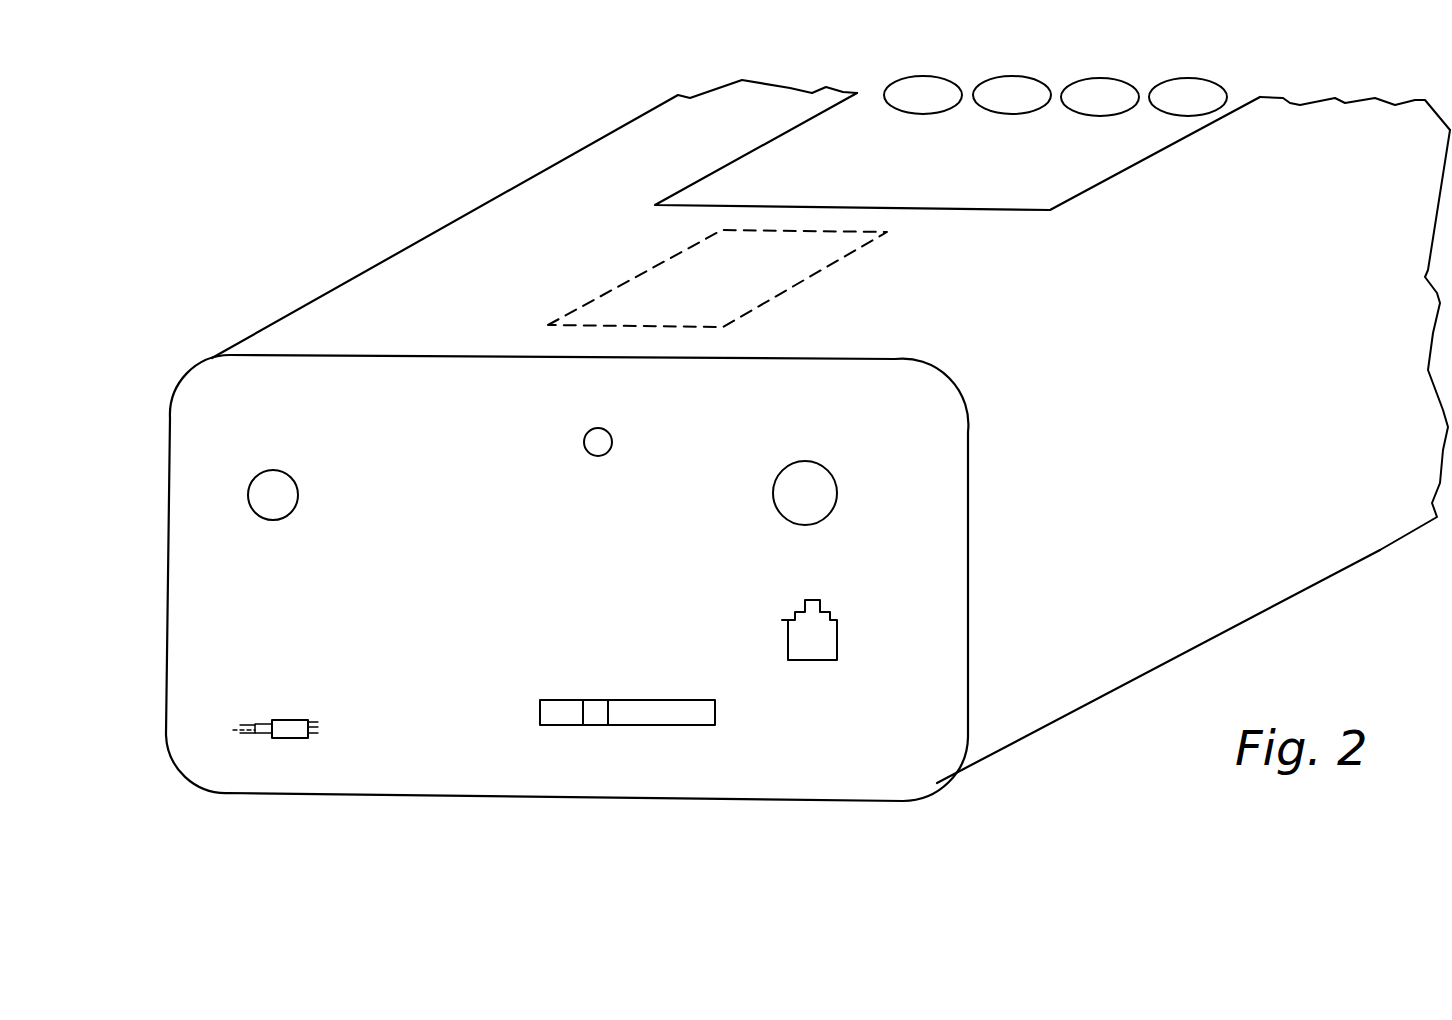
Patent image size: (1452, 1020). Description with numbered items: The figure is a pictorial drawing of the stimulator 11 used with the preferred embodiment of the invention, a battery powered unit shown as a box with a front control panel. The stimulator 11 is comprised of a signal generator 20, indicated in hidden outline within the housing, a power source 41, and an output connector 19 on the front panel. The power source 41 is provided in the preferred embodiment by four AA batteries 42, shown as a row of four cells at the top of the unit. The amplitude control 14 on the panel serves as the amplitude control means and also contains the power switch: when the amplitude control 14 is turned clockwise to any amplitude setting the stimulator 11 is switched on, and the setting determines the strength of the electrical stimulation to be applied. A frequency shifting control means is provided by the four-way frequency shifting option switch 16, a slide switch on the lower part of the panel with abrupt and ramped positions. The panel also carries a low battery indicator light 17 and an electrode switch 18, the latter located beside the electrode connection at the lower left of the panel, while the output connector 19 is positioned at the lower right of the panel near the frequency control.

The stimulator 11 is at (770, 431).
The amplitude control 14 is at (235, 410).
The four-way frequency shifting option switch 16 is at (663, 822).
The low battery indicator light 17 is at (606, 430).
The electrode switch 18 is at (290, 750).
The output connector 19 is at (898, 650).
The signal generator 20 is at (608, 286).
The power source 41 is at (1348, 300).
The AA batteries 42 is at (892, 72).